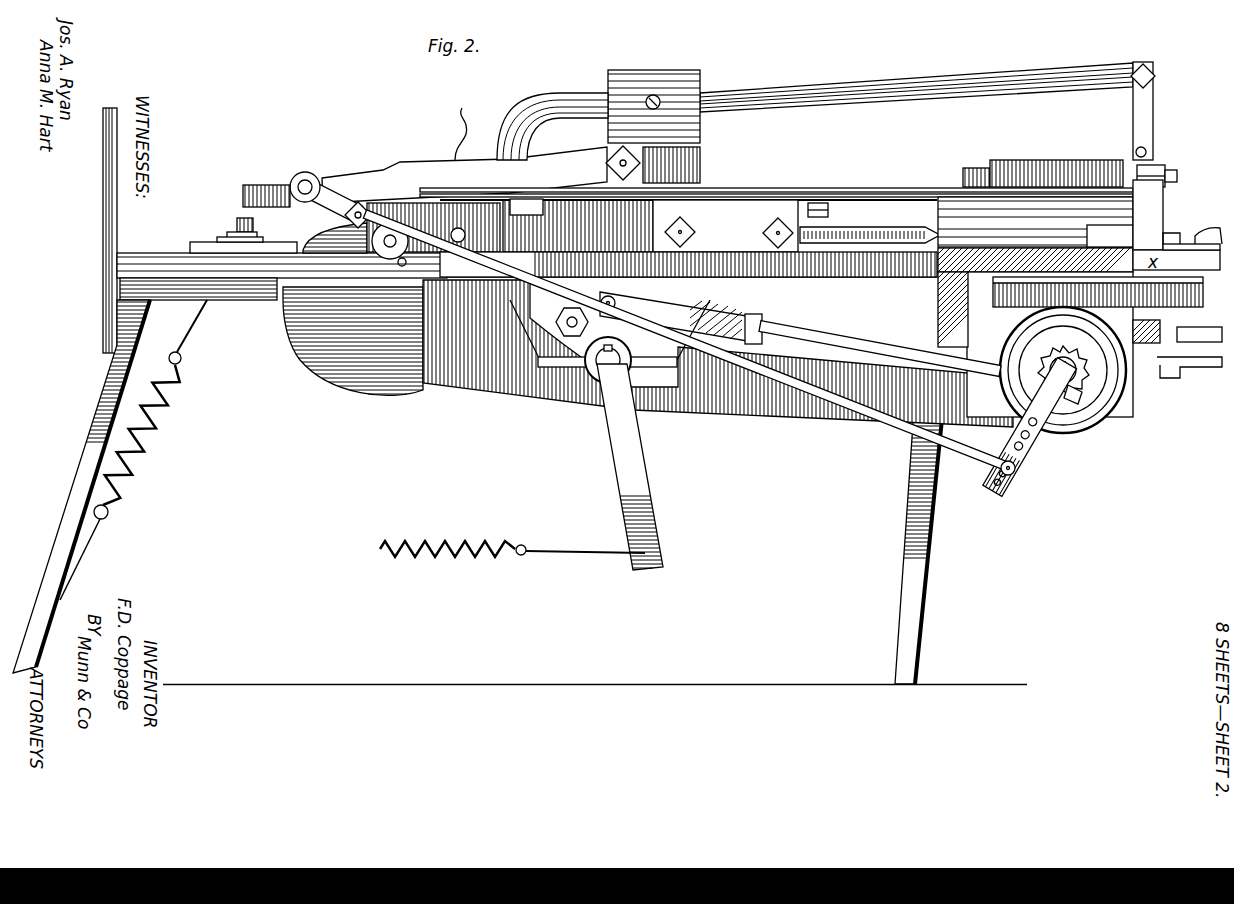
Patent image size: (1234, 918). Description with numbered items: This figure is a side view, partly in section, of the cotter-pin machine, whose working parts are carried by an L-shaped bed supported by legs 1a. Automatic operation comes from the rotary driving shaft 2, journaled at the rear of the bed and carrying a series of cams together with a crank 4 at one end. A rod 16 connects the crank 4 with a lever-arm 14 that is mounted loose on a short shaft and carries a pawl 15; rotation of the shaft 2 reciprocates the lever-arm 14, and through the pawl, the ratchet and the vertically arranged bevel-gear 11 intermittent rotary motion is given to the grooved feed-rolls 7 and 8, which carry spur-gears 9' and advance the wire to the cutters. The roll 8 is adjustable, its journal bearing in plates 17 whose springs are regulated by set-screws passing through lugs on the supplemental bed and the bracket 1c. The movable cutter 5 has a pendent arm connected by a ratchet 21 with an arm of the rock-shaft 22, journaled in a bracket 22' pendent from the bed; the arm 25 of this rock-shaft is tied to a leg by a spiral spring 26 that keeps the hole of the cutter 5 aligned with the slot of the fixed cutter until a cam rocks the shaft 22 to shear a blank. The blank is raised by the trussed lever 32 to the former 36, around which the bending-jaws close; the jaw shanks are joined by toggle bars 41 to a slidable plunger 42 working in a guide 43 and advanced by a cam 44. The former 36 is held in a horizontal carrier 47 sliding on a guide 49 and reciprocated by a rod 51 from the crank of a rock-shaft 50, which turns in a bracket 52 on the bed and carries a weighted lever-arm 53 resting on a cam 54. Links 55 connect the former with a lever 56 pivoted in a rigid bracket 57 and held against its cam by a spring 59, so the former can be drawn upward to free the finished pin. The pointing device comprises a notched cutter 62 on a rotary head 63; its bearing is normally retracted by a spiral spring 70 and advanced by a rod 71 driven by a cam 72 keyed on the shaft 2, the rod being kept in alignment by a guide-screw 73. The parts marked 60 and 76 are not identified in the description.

The legs 1a is at (100, 382).
The bracket 1c is at (1035, 222).
The rotary shaft 2 is at (385, 258).
The crank 4 is at (333, 198).
The movable cutter 5 is at (1005, 312).
The feed-roll 7 is at (1000, 286).
The feed-roll 8 is at (1206, 278).
The spur-gears 9' is at (1196, 320).
The bevel-gear 11 is at (1098, 340).
The lever-arm 14 is at (1022, 458).
The pawl 15 is at (1047, 372).
The rod 16 is at (890, 428).
The plates 17 is at (1192, 393).
The ratchet 21 is at (864, 347).
The rock-shaft 22 is at (587, 385).
The bracket 22' is at (687, 316).
The lever-arm 25 is at (612, 476).
The spiral spring 26 is at (465, 545).
The trussed lever 32 is at (490, 333).
The former 36 is at (1165, 176).
The bars 41 is at (913, 216).
The slidable plunger 42 is at (840, 216).
The guide 43 is at (725, 226).
The cam 44 is at (353, 309).
The reciprocable carrier 47 is at (968, 168).
The guide 49 is at (1015, 160).
The rock-shaft 50 is at (609, 163).
The rod 51 is at (860, 187).
The bracket 52 is at (671, 165).
The lever-arm 53 is at (464, 175).
The cam 54 is at (400, 270).
The links 55 is at (1147, 122).
The lever 56 is at (278, 186).
The rigid bracket 57 is at (670, 76).
The spring 59 is at (165, 386).
The bracket 60 is at (1163, 225).
The notched cutter 62 is at (768, 196).
The rotary head 63 is at (506, 210).
The spiral spring 70 is at (1063, 370).
The rod 71 is at (285, 247).
The cam 72 is at (1076, 400).
The guide-screw 73 is at (240, 222).
The stop 76 is at (1199, 336).